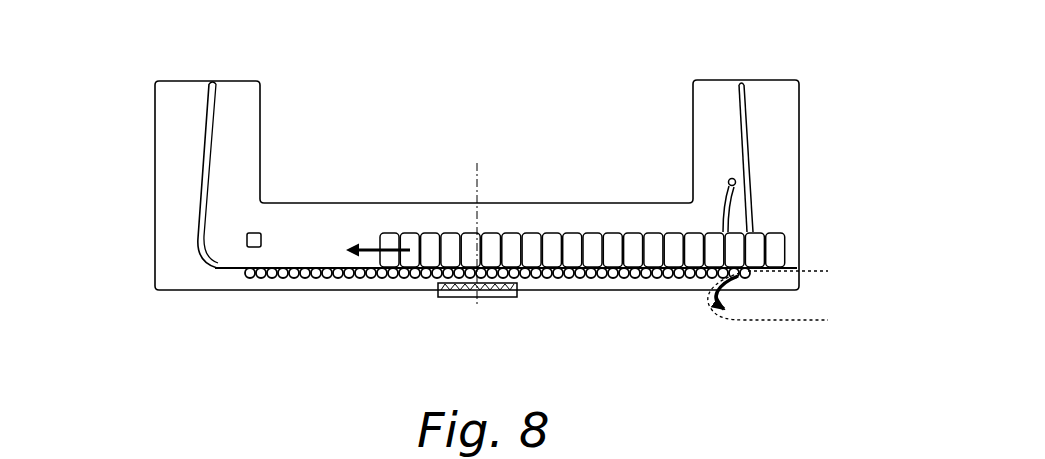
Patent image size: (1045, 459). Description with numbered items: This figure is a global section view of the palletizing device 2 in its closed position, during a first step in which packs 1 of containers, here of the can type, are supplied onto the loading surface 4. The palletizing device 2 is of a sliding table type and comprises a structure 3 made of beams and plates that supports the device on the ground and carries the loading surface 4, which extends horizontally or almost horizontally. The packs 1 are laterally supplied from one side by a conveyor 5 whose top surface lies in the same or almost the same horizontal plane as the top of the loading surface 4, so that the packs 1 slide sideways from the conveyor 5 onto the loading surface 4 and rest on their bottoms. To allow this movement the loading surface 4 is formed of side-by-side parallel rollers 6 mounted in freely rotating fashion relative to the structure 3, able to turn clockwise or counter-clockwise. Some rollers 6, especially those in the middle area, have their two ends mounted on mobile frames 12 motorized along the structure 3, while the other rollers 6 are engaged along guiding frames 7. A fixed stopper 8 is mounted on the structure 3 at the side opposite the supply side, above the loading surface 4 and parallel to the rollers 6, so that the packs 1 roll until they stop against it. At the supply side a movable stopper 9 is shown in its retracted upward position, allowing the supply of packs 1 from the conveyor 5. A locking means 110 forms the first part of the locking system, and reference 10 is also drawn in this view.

The pack of containers 1 is at (614, 224).
The palletizing device 2 is at (816, 95).
The structure 3 is at (173, 145).
The loading surface 4 is at (331, 255).
The conveyor 5 is at (694, 308).
The rollers 6 is at (273, 278).
The guiding frames 7 is at (753, 188).
The fixed stopper 8 is at (261, 234).
The movable stopper 9 is at (726, 202).
The feed opening 10 is at (728, 180).
The mobile frames 12 is at (337, 285).
The locking means 110 is at (462, 308).